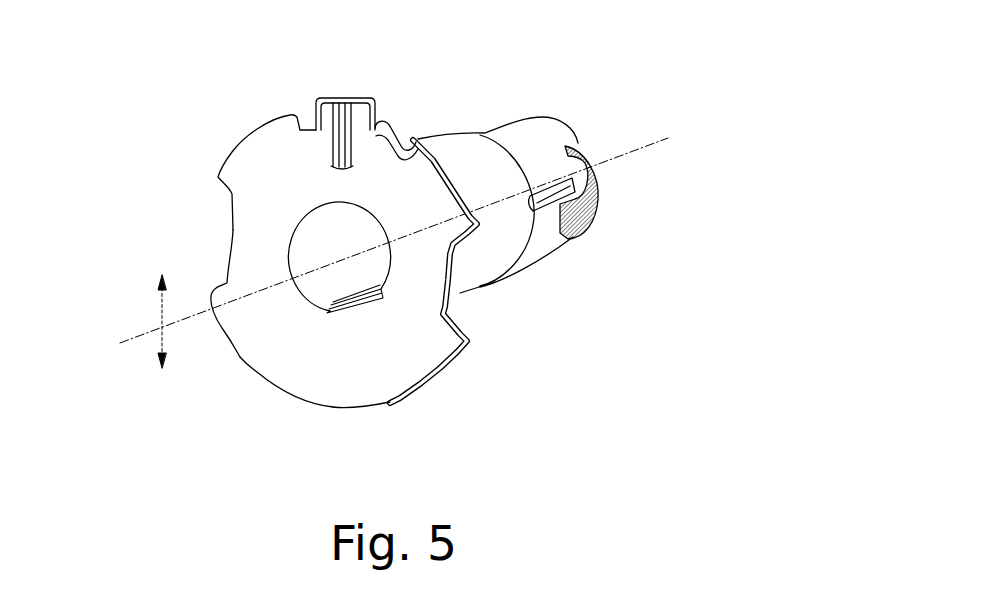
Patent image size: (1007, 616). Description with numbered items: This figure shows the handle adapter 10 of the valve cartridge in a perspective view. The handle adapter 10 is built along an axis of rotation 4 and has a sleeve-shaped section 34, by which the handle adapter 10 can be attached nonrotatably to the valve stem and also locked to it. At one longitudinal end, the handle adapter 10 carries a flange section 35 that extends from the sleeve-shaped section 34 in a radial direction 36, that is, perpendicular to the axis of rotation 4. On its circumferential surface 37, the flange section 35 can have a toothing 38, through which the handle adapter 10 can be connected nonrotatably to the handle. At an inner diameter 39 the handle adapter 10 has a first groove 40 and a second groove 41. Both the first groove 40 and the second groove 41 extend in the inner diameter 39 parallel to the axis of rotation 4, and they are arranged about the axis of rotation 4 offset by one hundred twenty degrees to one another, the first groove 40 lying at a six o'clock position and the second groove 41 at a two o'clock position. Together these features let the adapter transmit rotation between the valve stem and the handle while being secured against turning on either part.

The handle adapter 10 is at (606, 78).
The axis of rotation 4 is at (637, 150).
The sleeve-shaped section 34 is at (482, 289).
The flange section 35 is at (404, 400).
The radial direction 36 is at (160, 334).
The circumferential surface 37 is at (267, 378).
The toothing 38 is at (228, 350).
The inner diameter 39 is at (298, 222).
The first groove 40 is at (333, 318).
The second groove 41 is at (367, 197).